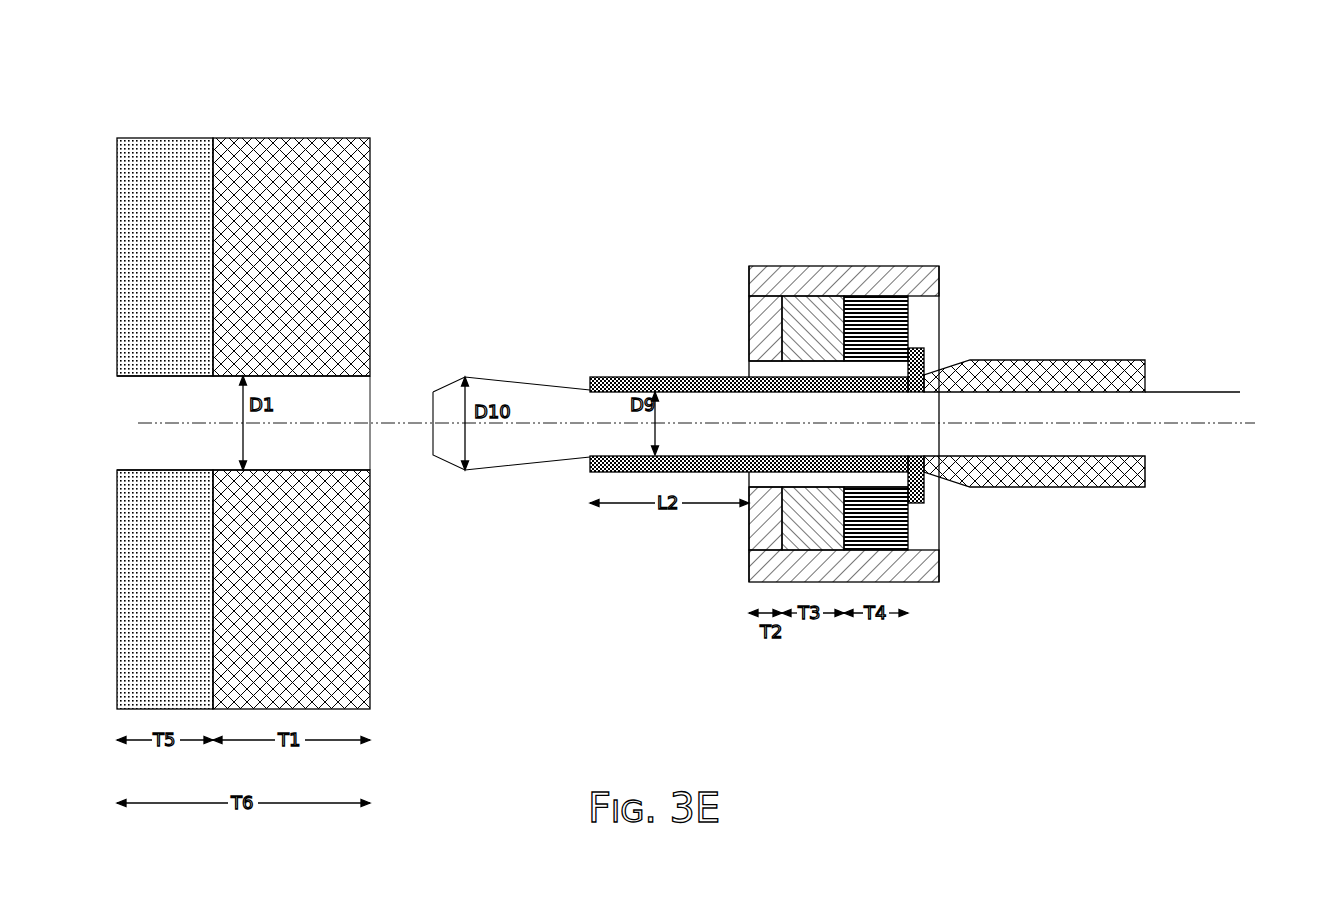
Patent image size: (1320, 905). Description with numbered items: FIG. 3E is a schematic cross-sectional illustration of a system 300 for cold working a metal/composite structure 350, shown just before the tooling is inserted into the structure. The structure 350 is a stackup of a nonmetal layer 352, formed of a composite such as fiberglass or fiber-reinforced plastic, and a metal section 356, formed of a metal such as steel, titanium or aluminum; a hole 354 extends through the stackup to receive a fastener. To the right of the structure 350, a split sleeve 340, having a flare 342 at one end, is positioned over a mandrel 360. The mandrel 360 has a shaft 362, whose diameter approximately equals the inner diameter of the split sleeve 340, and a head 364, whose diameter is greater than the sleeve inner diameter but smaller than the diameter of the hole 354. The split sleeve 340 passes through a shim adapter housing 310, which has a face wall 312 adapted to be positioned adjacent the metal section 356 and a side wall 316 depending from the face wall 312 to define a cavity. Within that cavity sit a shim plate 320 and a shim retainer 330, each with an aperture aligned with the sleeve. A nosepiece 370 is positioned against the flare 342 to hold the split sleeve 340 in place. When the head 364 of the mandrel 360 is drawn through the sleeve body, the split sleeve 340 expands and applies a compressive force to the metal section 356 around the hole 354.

The system 300 is at (833, 354).
The shim adapter housing 310 is at (833, 386).
The face wall 312 is at (749, 550).
The side wall 316 is at (845, 266).
The shim plate 320 is at (813, 423).
The shim retainer 330 is at (876, 423).
The split sleeve 340 is at (669, 377).
The flare 342 is at (915, 348).
The structure 350 is at (280, 370).
The nonmetal layer 352 is at (164, 138).
The hole 354 is at (353, 388).
The metal section 356 is at (290, 138).
The mandrel 360 is at (1196, 473).
The shaft 362 is at (1182, 391).
The head 364 is at (490, 377).
The nosepiece 370 is at (1057, 360).